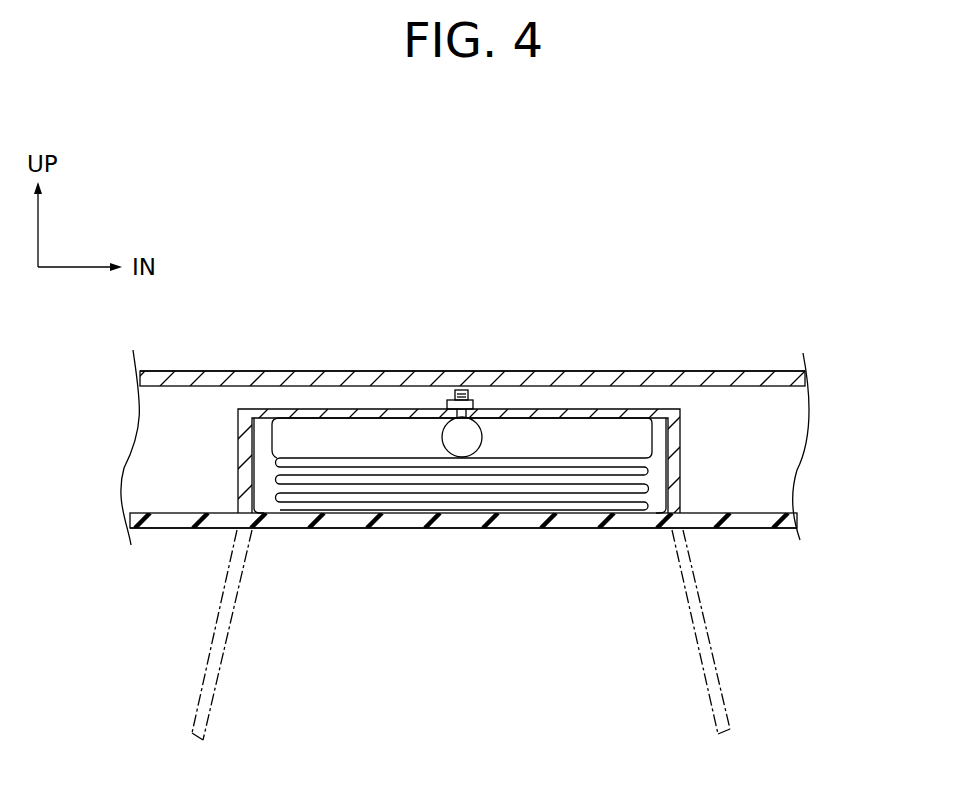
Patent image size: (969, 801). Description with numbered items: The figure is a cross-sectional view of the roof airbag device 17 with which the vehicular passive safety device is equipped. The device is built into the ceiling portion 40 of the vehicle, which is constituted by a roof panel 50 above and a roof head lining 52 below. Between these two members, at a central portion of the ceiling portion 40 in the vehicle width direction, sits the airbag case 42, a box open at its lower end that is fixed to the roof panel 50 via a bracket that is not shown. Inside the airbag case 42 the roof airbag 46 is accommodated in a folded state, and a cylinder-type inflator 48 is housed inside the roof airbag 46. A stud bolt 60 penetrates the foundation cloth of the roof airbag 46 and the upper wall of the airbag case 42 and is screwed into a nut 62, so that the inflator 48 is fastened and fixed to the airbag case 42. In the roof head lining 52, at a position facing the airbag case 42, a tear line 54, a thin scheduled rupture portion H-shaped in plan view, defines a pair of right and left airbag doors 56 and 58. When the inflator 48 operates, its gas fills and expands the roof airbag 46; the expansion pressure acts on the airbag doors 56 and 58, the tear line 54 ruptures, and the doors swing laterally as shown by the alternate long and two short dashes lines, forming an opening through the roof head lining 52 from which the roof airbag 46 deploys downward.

The roof airbag device 17 is at (782, 440).
The ceiling portion 40 is at (291, 371).
The airbag case 42 is at (353, 409).
The roof airbag 46 is at (262, 434).
The inflator 48 is at (441, 431).
The roof panel 50 is at (766, 371).
The roof head lining 52 is at (762, 529).
The tear line 54 is at (463, 530).
The airbag door 56 is at (364, 530).
The airbag door 58 is at (590, 530).
The stud bolt 60 is at (458, 389).
The nut 62 is at (476, 403).